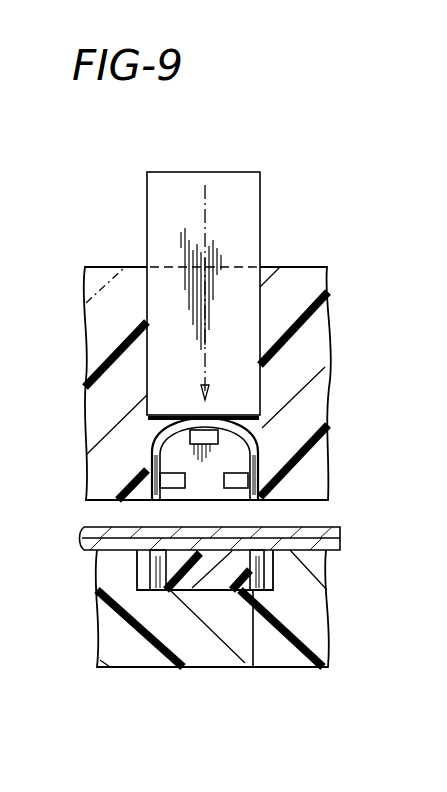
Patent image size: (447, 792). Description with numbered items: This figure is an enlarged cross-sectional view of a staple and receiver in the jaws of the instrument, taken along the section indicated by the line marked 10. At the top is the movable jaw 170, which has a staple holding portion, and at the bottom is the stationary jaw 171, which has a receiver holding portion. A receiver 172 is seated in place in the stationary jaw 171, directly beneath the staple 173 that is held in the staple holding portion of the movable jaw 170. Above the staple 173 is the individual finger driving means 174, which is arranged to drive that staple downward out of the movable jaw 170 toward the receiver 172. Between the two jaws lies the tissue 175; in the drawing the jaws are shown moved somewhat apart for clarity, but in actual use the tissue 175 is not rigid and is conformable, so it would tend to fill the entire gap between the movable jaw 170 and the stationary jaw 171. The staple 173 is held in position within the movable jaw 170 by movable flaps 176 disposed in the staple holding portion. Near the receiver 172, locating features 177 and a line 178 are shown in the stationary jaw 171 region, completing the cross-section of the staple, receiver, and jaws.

The section line 10- 10 is at (160, 150).
The movable jaw 170 is at (318, 343).
The stationary jaw 171 is at (320, 615).
The receiver 172 is at (273, 568).
The staple 173 is at (258, 450).
The finger driving means 174 is at (250, 300).
The tissue 175 is at (318, 530).
The movable flaps 176 is at (154, 441).
The locating pin 177 is at (152, 532).
The seam line 178 is at (253, 667).